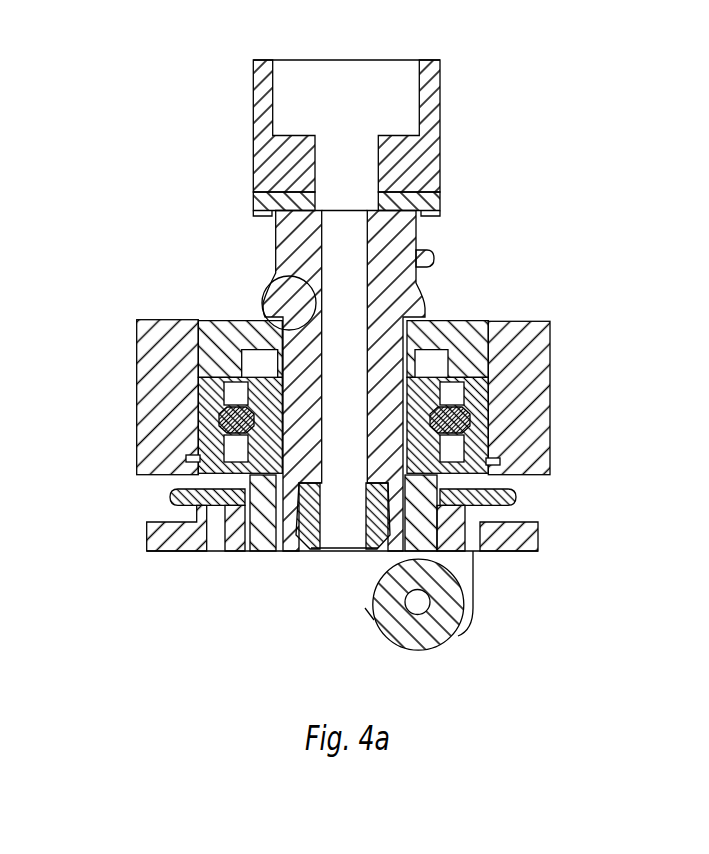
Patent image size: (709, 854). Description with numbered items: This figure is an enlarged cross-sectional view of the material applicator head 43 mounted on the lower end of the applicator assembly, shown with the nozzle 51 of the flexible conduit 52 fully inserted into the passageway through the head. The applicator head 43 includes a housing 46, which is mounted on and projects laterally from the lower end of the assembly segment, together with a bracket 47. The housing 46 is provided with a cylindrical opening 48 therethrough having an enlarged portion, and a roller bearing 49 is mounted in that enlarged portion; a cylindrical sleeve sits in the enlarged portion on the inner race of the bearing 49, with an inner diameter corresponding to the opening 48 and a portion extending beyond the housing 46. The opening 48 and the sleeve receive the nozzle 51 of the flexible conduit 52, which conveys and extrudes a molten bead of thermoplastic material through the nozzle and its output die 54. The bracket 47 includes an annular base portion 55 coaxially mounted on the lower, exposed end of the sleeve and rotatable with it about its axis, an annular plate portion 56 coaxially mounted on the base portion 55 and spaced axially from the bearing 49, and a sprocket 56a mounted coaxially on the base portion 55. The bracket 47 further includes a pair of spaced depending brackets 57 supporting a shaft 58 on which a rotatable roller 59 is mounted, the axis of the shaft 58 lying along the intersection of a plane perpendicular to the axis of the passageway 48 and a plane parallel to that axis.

The applicator head 43 is at (530, 263).
The housing 46 is at (137, 397).
The bracket 47 is at (327, 552).
The cylindrical opening 48 is at (275, 275).
The roller bearing 49 is at (490, 385).
The nozzle 51 is at (275, 252).
The flexible conduit 52 is at (253, 127).
The output die 54 is at (310, 551).
The annular base portion 55 is at (262, 551).
The annular plate portion 56 is at (175, 551).
The sprocket 56a is at (516, 498).
The depending bracket 57 is at (473, 572).
The shaft 58 is at (398, 612).
The roller 59 is at (438, 628).